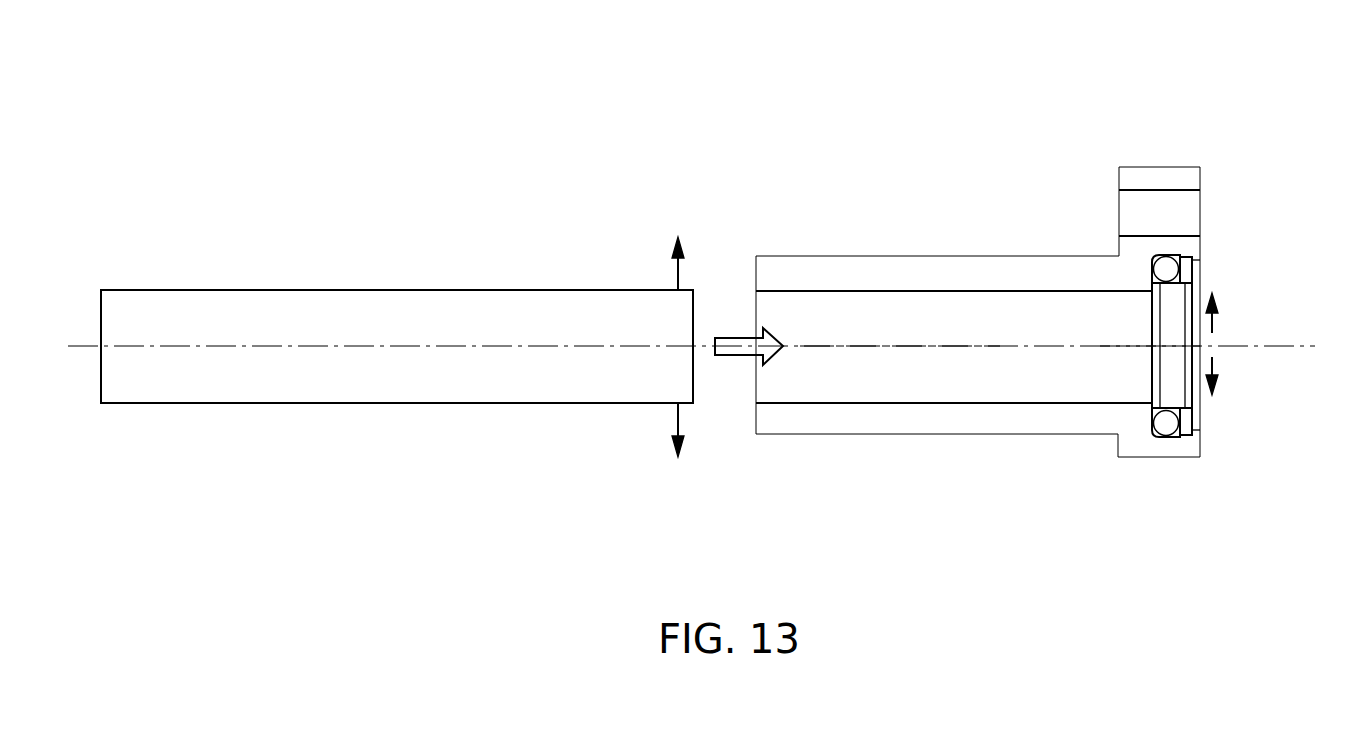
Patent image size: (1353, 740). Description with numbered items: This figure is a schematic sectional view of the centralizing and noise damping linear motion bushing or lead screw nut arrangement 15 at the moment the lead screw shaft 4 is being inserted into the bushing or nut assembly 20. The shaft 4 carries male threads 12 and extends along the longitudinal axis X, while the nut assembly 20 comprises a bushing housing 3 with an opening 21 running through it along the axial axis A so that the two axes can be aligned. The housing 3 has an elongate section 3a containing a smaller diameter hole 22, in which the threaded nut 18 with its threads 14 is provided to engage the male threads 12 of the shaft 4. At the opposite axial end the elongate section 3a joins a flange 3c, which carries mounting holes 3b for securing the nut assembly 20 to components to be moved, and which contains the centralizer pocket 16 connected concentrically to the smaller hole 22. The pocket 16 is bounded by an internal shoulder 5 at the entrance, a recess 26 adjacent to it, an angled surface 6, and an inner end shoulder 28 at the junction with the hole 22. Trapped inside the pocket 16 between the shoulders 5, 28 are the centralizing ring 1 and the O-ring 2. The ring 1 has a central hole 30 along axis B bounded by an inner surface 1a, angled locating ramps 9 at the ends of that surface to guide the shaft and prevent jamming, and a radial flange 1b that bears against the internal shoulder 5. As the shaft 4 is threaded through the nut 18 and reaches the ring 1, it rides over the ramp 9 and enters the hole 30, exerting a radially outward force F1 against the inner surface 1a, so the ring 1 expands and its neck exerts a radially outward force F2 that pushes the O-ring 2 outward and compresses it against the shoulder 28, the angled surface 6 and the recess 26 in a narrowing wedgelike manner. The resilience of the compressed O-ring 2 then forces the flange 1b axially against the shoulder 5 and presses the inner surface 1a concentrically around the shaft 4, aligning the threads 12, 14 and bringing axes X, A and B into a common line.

The centralizing and noise damping linear motion bushing or lead screw nut arrangeme 15 is at (403, 207).
The bushing or nut assembly 20 is at (992, 64).
The lead screw shaft 4 is at (397, 321).
The male threads 12 is at (384, 290).
The longitudinal axis X is at (81, 347).
The radially outward force F1 is at (678, 435).
The threaded nut 18 is at (954, 321).
The elongate section 3a is at (873, 256).
The smaller diameter hole 22 is at (955, 318).
The threads 14 is at (847, 292).
The axial axis A is at (900, 348).
The opening 21 is at (768, 386).
The bushing housing 3 is at (1130, 286).
The flange 3c is at (1130, 286).
The mounting holes 3b is at (1119, 218).
The angled locating ramps 9 is at (1157, 290).
The axis of centralizing ring B is at (1140, 345).
The radially outward force F2 is at (1212, 318).
The central hole 30 is at (1137, 345).
The inner surface 1a is at (1172, 402).
The internal shoulder 28 is at (1152, 405).
The O-ring 2 is at (1162, 425).
The centralizing ring 1 is at (1176, 374).
The flange 1b is at (1176, 374).
The internal shoulder 5 is at (1195, 431).
The angled surface 6 is at (1163, 438).
The centralizer pocket 16 is at (1208, 450).
The recess 26 is at (1188, 438).